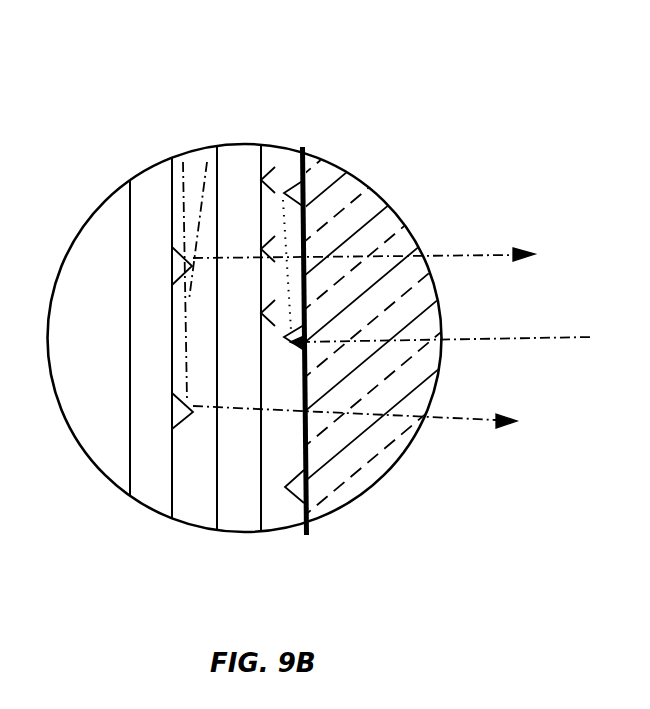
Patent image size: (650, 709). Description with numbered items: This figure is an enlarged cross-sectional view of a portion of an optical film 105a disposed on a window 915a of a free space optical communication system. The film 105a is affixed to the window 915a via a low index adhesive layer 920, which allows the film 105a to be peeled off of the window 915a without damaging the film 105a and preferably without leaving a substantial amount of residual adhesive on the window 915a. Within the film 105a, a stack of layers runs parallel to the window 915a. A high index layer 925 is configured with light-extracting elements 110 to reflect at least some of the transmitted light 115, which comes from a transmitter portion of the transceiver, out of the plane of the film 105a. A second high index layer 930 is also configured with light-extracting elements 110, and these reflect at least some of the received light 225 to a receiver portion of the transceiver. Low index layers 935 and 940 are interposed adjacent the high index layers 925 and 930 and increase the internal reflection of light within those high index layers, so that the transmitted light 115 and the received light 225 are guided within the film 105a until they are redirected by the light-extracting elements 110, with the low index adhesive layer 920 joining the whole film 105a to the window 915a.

The film 105a is at (102, 313).
The light-extracting elements 110 is at (175, 264).
The transmitted light 115 is at (188, 168).
The received light 225 is at (537, 337).
The window 915a is at (378, 230).
The low index adhesive layer 920 is at (306, 535).
The high index layer 925 is at (205, 512).
The high index layer 930 is at (288, 513).
The low index layer 935 is at (147, 492).
The low index layer 940 is at (232, 153).